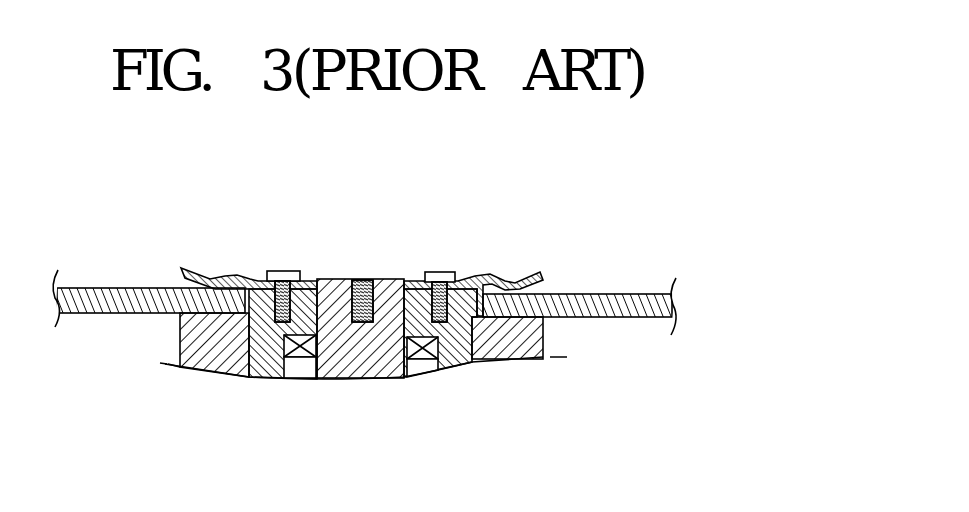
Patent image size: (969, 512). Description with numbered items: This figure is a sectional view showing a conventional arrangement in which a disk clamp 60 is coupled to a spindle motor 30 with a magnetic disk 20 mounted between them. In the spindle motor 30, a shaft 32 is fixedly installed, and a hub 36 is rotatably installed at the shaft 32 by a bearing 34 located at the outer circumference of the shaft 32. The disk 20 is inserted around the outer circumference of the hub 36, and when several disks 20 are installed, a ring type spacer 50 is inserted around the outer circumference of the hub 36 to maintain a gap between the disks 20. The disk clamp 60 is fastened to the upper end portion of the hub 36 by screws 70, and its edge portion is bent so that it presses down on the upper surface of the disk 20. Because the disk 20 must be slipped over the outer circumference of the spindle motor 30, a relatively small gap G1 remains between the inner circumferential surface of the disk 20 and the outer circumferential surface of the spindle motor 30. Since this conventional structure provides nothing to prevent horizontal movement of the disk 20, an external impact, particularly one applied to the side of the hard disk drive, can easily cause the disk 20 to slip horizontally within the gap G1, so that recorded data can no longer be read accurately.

The magnetic disk 20 is at (627, 293).
The spindle motor 30 is at (339, 393).
The shaft 32 is at (388, 278).
The bearing 34 is at (418, 355).
The hub 36 is at (462, 357).
The ring type spacer 50 is at (547, 347).
The disk clamp 60 is at (486, 268).
The screws 70 is at (438, 272).
The gap G1 is at (249, 289).